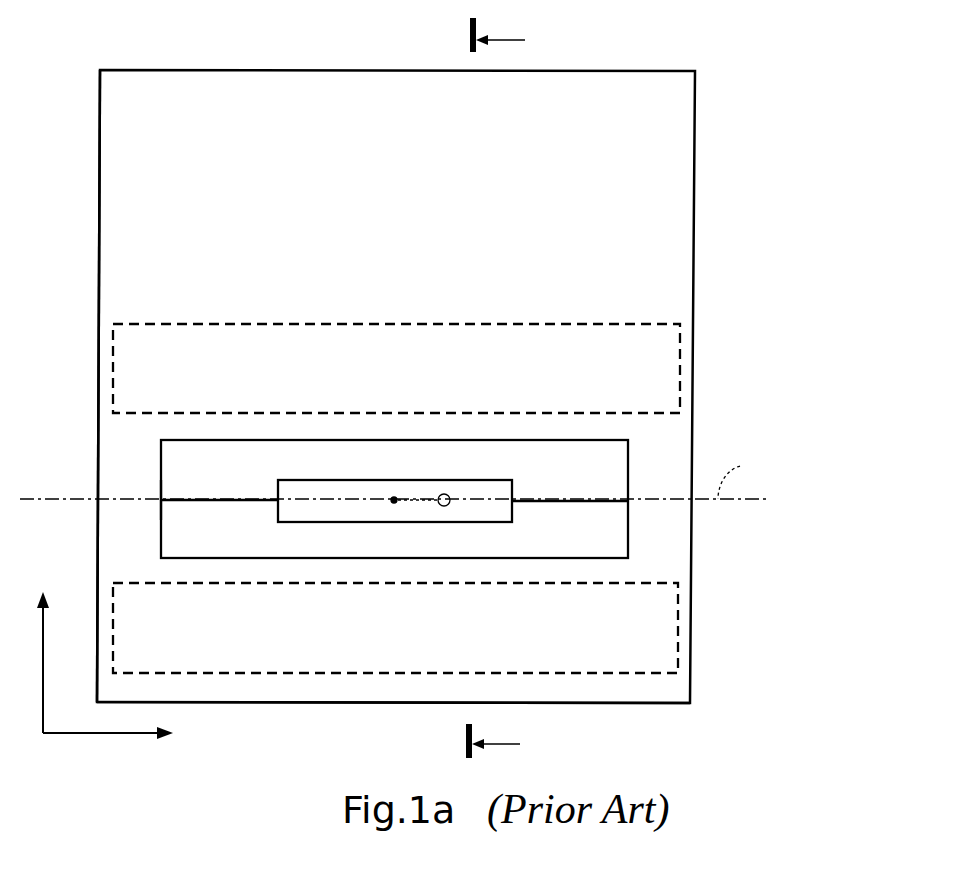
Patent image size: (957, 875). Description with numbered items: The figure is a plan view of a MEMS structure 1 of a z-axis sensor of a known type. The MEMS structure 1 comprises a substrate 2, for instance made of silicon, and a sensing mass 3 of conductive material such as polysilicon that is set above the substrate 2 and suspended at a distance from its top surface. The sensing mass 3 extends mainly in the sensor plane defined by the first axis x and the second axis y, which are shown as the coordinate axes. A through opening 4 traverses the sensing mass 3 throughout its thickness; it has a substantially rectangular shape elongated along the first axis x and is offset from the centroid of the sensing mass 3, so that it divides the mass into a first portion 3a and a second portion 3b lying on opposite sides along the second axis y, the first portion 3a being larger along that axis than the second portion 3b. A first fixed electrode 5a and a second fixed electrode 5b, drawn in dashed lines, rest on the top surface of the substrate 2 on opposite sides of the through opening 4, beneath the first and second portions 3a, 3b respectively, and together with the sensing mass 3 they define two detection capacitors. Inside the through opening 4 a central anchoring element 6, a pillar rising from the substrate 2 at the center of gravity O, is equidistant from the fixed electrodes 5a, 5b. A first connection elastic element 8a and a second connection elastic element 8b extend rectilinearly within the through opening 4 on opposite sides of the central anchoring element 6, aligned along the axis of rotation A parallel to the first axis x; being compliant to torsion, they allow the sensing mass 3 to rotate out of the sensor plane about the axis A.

The MEMS structure 1 is at (712, 190).
The substrate 2 is at (617, 469).
The sensing mass 3 is at (284, 96).
The first portion 3a is at (112, 138).
The second portion 3b is at (672, 689).
The through opening 4 is at (172, 487).
The first fixed electrode 5a is at (668, 338).
The second fixed electrode 5b is at (650, 639).
The central anchoring element 6 is at (308, 513).
The first connection elastic element 8a is at (218, 500).
The second connection elastic element 8b is at (562, 501).